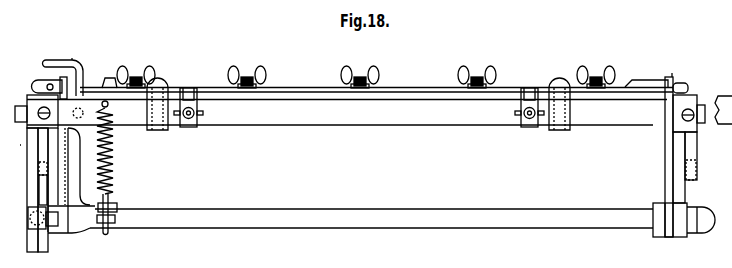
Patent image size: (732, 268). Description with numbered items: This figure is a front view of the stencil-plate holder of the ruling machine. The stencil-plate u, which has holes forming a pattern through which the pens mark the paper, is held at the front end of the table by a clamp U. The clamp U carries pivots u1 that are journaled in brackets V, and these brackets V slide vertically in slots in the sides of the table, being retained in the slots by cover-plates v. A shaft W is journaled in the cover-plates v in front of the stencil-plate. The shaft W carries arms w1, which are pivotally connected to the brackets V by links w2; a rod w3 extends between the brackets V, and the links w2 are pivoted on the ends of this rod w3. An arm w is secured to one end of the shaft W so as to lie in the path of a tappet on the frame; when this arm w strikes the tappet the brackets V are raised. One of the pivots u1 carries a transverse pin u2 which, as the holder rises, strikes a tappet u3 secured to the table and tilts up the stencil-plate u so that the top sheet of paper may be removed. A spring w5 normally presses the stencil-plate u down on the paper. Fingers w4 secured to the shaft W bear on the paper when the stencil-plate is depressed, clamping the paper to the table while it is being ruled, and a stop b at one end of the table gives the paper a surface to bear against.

The shaft W is at (601, 118).
The arm w is at (28, 208).
The arms w1 is at (699, 152).
The links w2 is at (698, 200).
The rod w3 is at (617, 222).
The fingers w4 is at (188, 88).
The spring w5 is at (113, 185).
The clamp U is at (409, 92).
The stencil-plate u is at (45, 125).
The pivots u1 is at (98, 80).
The transverse pin u2 is at (33, 87).
The tappet u3 is at (55, 60).
The cover-plates v is at (45, 125).
The brackets V is at (371, 61).
The stop b is at (163, 87).